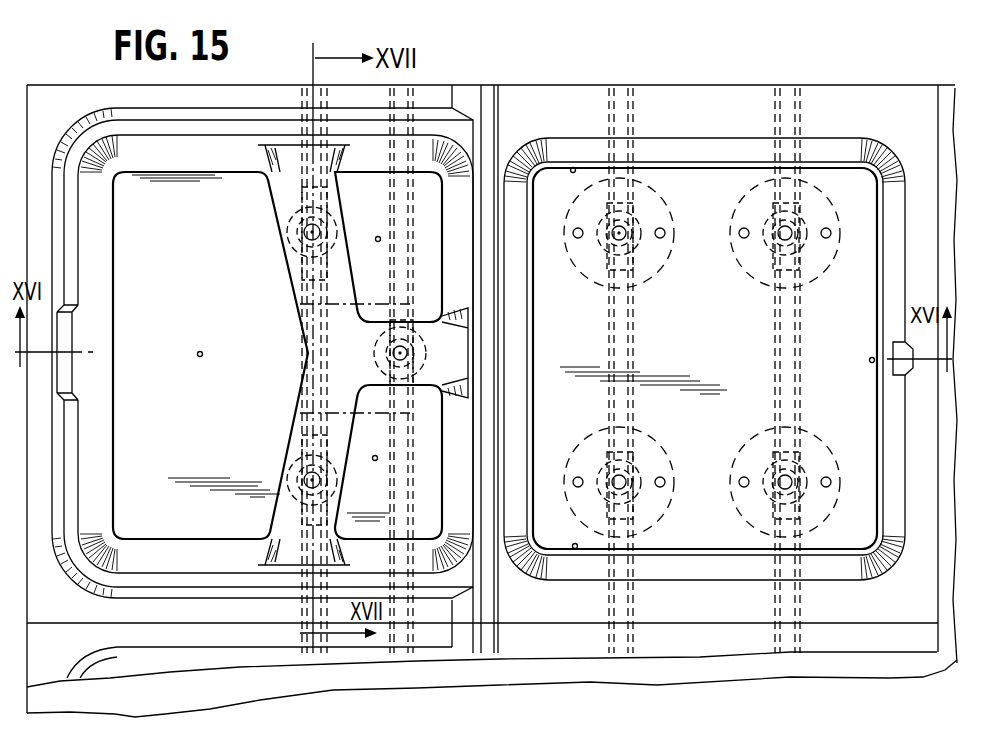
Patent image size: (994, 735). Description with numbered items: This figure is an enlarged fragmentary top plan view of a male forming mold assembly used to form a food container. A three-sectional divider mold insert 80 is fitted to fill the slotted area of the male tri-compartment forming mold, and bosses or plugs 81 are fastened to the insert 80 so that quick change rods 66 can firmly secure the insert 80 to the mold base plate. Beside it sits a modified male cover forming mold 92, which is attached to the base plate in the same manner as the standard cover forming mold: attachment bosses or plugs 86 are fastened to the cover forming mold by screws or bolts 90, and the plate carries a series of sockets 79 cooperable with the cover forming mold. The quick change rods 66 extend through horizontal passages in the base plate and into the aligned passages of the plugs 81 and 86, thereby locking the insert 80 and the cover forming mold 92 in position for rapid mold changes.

The quick change rod 66 is at (626, 612).
The socket 79 is at (600, 225).
The three-sectional divider mold insert 80 is at (362, 368).
The boss or plug 81 is at (296, 232).
The attachment boss or plug 86 is at (823, 451).
The screw or bolt 90 is at (742, 481).
The modified male cover forming mold 92 is at (722, 346).